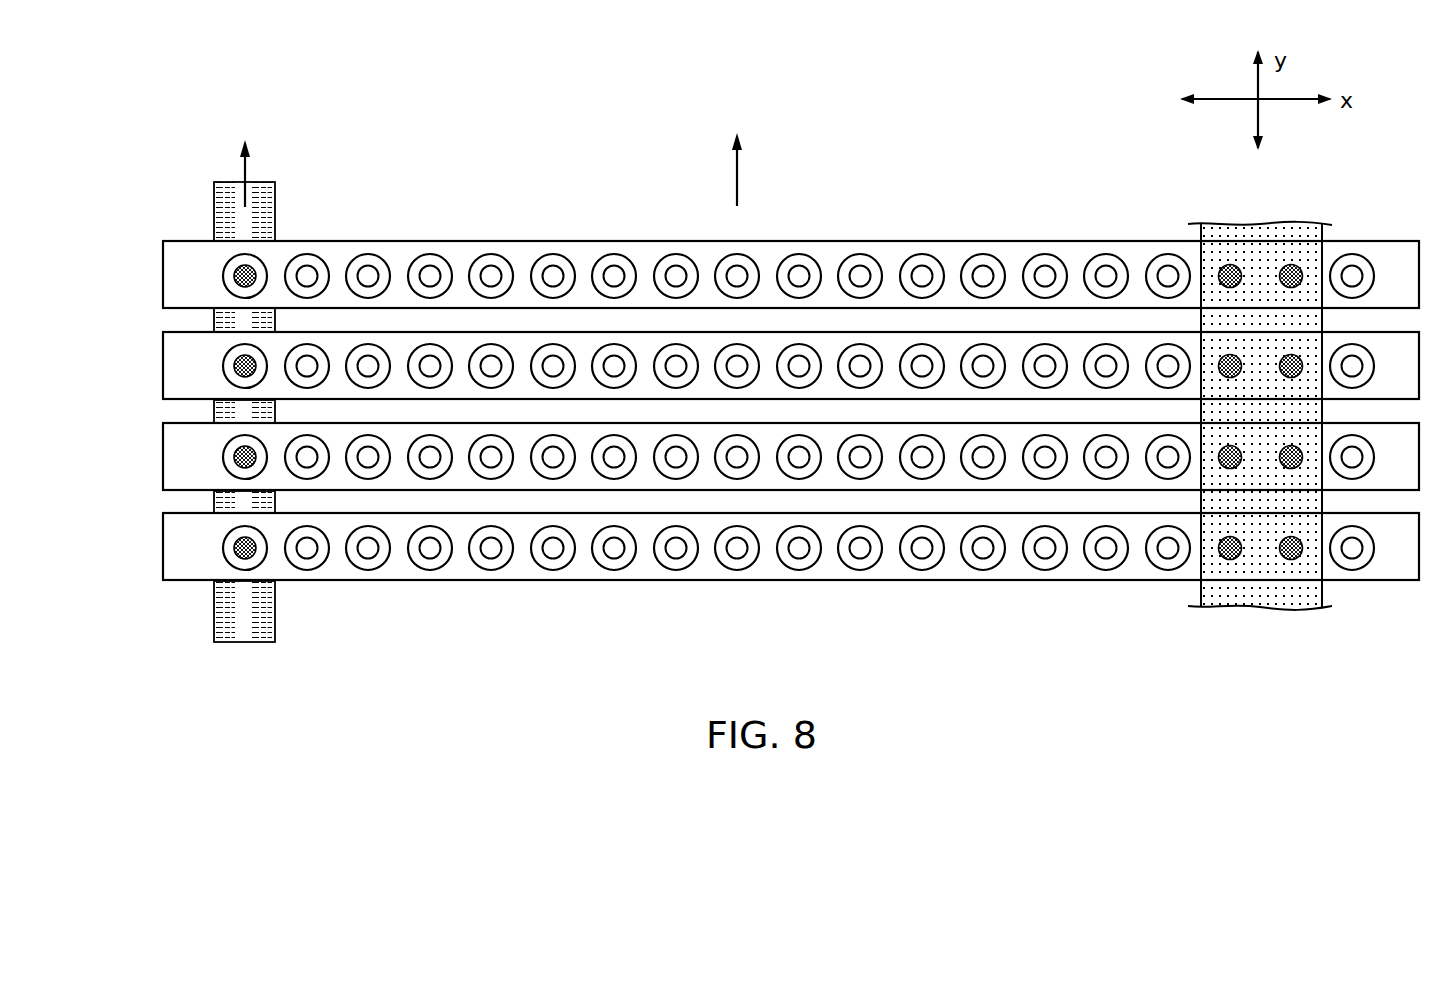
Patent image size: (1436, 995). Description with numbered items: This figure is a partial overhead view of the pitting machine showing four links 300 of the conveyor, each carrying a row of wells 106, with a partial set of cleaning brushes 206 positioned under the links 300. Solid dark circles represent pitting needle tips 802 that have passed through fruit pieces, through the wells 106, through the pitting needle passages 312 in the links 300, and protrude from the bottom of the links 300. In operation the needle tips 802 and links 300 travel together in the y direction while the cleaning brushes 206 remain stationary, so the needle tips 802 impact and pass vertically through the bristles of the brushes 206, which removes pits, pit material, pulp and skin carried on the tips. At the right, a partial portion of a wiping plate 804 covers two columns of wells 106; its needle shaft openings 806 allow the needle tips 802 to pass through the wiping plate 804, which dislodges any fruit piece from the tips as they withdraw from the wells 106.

The wells 106 is at (411, 560).
The cleaning brushes 206 is at (276, 212).
The links 300 is at (192, 276).
The pitting needle passages 312 is at (434, 552).
The pitting needle tips 802 is at (243, 288).
The wiping plate 804 is at (1272, 598).
The needle shaft openings 806 is at (1230, 263).